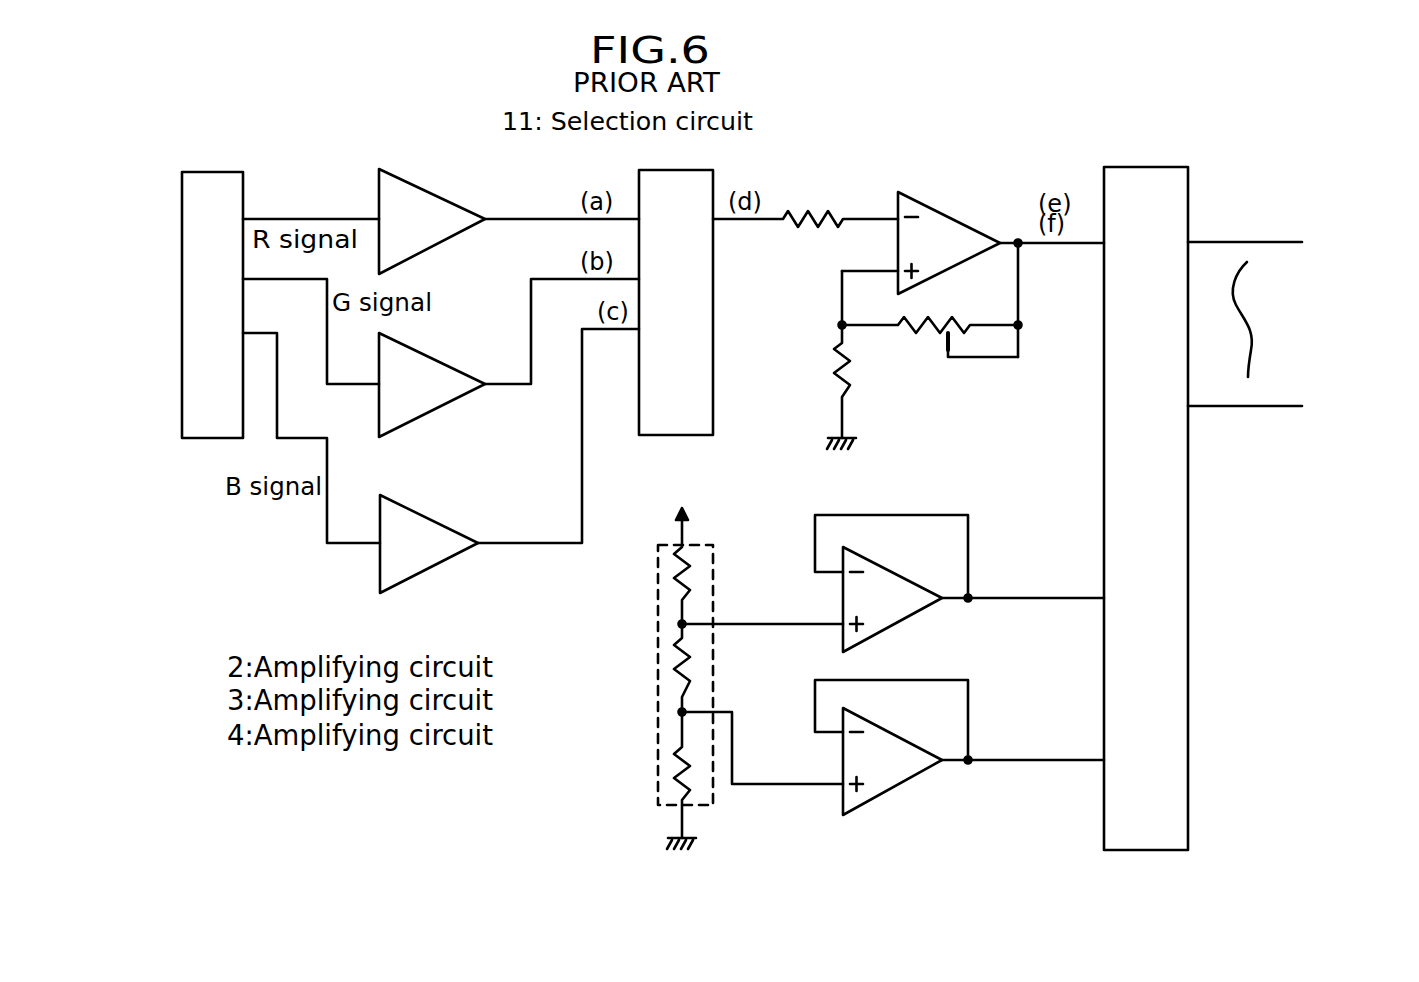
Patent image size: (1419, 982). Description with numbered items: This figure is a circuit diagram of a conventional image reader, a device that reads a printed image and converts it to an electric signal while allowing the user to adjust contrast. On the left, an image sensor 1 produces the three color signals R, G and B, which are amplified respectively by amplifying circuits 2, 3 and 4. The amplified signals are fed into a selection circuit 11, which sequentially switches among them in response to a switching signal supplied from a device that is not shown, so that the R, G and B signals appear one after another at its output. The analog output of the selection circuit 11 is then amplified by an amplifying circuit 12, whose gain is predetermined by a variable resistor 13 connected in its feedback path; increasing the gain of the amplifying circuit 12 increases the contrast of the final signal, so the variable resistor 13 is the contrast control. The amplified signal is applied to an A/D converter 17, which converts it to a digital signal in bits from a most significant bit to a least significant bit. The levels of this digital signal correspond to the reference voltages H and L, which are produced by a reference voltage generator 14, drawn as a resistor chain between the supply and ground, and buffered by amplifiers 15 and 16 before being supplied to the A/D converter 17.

The image sensor 1 is at (212, 172).
The amplifying circuit 2 is at (443, 195).
The amplifying circuit 3 is at (427, 350).
The amplifying circuit 4 is at (430, 517).
The selection circuit 11 is at (713, 307).
The amplifying circuit 12 is at (942, 212).
The variable resistor 13 is at (920, 332).
The reference voltage generator 14 is at (658, 693).
The amplifier 15 is at (898, 622).
The amplifier 16 is at (883, 792).
The A/D converter 17 is at (1140, 167).